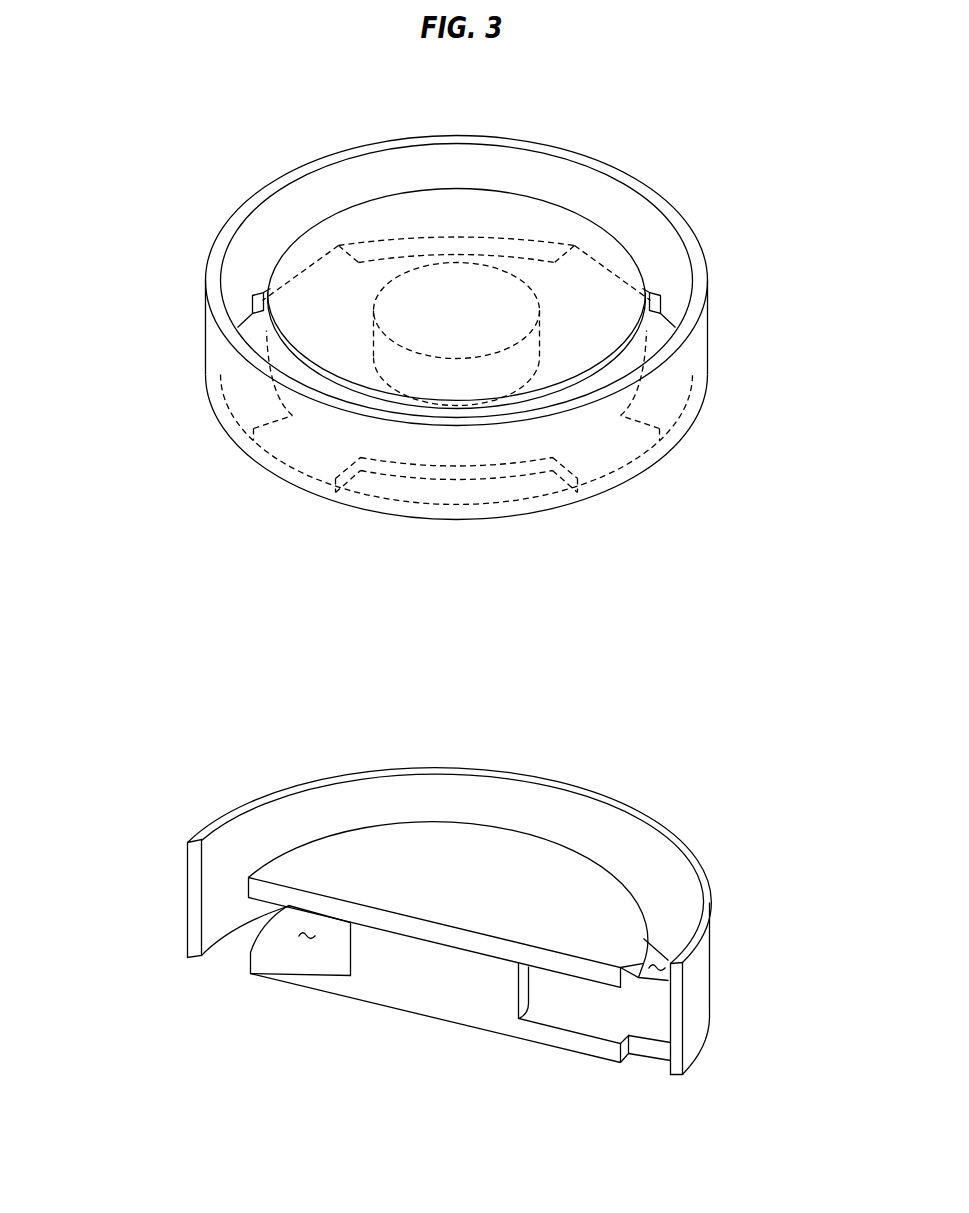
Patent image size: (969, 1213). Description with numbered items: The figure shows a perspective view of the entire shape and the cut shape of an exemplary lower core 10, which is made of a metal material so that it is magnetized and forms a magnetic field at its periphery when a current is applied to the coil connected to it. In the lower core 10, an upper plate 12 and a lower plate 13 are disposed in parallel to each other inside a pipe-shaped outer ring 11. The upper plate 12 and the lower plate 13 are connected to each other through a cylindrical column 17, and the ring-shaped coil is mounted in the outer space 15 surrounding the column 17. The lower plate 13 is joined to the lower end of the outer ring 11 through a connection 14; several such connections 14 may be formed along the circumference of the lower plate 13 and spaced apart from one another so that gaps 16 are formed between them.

The lower core 10 is at (662, 123).
The outer ring 11 is at (677, 225).
The upper plate 12 is at (308, 232).
The lower plate 13 is at (543, 1035).
The connection 14 is at (252, 298).
The outer space 15 is at (252, 975).
The gap 16 is at (652, 965).
The cylindrical column 17 is at (388, 950).